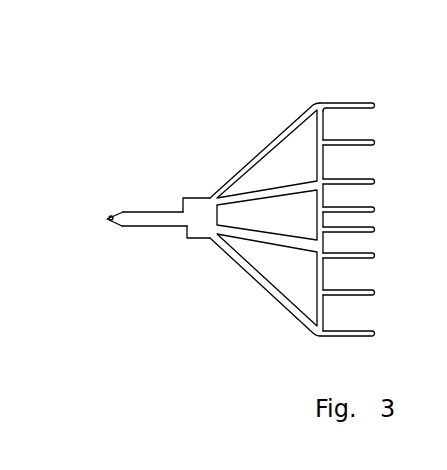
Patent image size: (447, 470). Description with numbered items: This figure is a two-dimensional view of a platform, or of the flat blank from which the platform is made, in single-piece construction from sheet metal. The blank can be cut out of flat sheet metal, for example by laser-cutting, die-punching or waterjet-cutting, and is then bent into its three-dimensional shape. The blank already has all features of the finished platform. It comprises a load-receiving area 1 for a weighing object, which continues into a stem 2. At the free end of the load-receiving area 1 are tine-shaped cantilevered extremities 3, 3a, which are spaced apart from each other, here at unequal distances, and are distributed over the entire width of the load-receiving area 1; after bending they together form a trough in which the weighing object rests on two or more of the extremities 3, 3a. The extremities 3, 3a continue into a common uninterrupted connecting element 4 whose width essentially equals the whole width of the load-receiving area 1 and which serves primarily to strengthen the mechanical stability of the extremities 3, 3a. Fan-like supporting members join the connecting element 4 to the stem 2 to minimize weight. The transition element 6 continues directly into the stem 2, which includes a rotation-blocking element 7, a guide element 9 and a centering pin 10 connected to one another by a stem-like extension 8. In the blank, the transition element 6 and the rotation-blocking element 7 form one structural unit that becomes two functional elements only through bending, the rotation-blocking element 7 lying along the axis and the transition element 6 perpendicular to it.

The load-receiving area 1 is at (272, 320).
The stem 2 is at (163, 275).
The tine-shaped cantilevered extremity 3 is at (355, 143).
The tine-shaped cantilevered extremity 3a is at (348, 103).
The connecting element 4 is at (317, 141).
The transition element 6 is at (208, 210).
The rotation-blocking element 7 is at (191, 205).
The stem-like extension 8 is at (143, 215).
The guide element 9 is at (169, 214).
The centering pin 10 is at (107, 220).